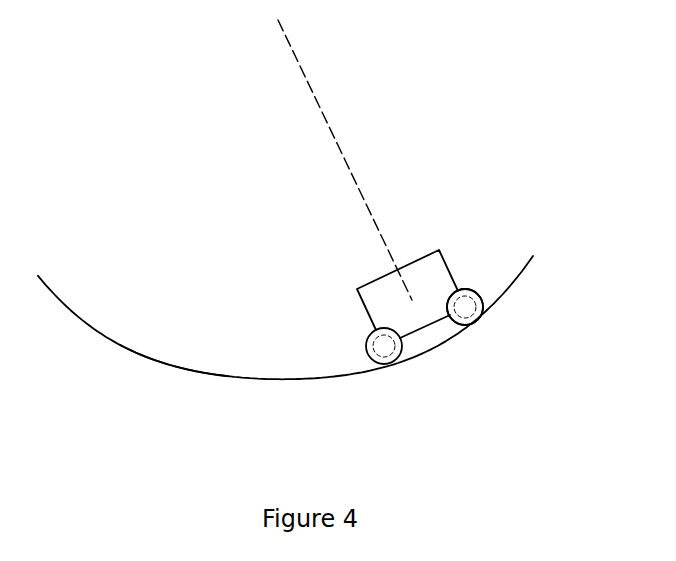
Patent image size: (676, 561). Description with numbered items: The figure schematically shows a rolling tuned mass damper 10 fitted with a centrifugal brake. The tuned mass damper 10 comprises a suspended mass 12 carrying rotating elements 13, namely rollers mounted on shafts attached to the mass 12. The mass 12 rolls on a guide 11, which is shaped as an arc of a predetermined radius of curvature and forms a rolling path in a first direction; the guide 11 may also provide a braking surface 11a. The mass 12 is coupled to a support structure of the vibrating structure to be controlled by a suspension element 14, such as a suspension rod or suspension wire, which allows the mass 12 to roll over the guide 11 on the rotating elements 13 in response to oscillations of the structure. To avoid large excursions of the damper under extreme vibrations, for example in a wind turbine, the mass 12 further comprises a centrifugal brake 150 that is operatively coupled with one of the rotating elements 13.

The tuned mass damper 10 is at (450, 168).
The guide 11 is at (232, 378).
The braking surface 11a is at (167, 363).
The suspended mass 12 is at (357, 287).
The rotating elements 13 is at (385, 364).
The suspension element 14 is at (310, 88).
The centrifugal brake 150 is at (470, 290).